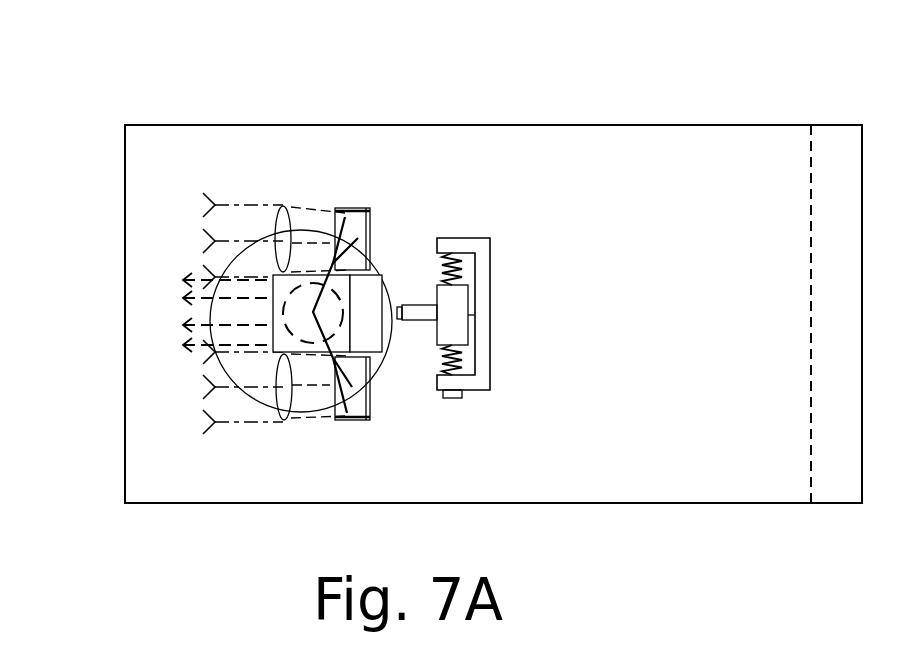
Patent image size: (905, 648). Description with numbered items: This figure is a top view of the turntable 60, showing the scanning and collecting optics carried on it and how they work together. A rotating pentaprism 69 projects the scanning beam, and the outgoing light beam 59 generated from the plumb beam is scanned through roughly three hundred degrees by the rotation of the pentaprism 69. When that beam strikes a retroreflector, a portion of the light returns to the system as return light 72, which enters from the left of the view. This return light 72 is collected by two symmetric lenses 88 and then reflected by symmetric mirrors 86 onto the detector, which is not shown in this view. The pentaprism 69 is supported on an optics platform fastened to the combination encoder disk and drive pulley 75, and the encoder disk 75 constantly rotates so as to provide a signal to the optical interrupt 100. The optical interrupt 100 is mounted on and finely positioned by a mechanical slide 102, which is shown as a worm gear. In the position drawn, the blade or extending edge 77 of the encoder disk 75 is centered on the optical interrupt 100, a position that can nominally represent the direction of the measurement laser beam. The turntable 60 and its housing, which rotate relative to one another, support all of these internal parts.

The turntable 60 is at (680, 92).
The return light 72 is at (242, 207).
The blade or extending edge 77 is at (212, 348).
The scanning light beam 59 is at (186, 272).
The lenses 88 is at (283, 207).
The mirrors 86 is at (375, 206).
The pentaprism 69 is at (373, 268).
The combination encoder disk and drive pulley 75 is at (382, 350).
The optical interrupt switch 100 is at (413, 320).
The mechanical slide 102 is at (490, 238).